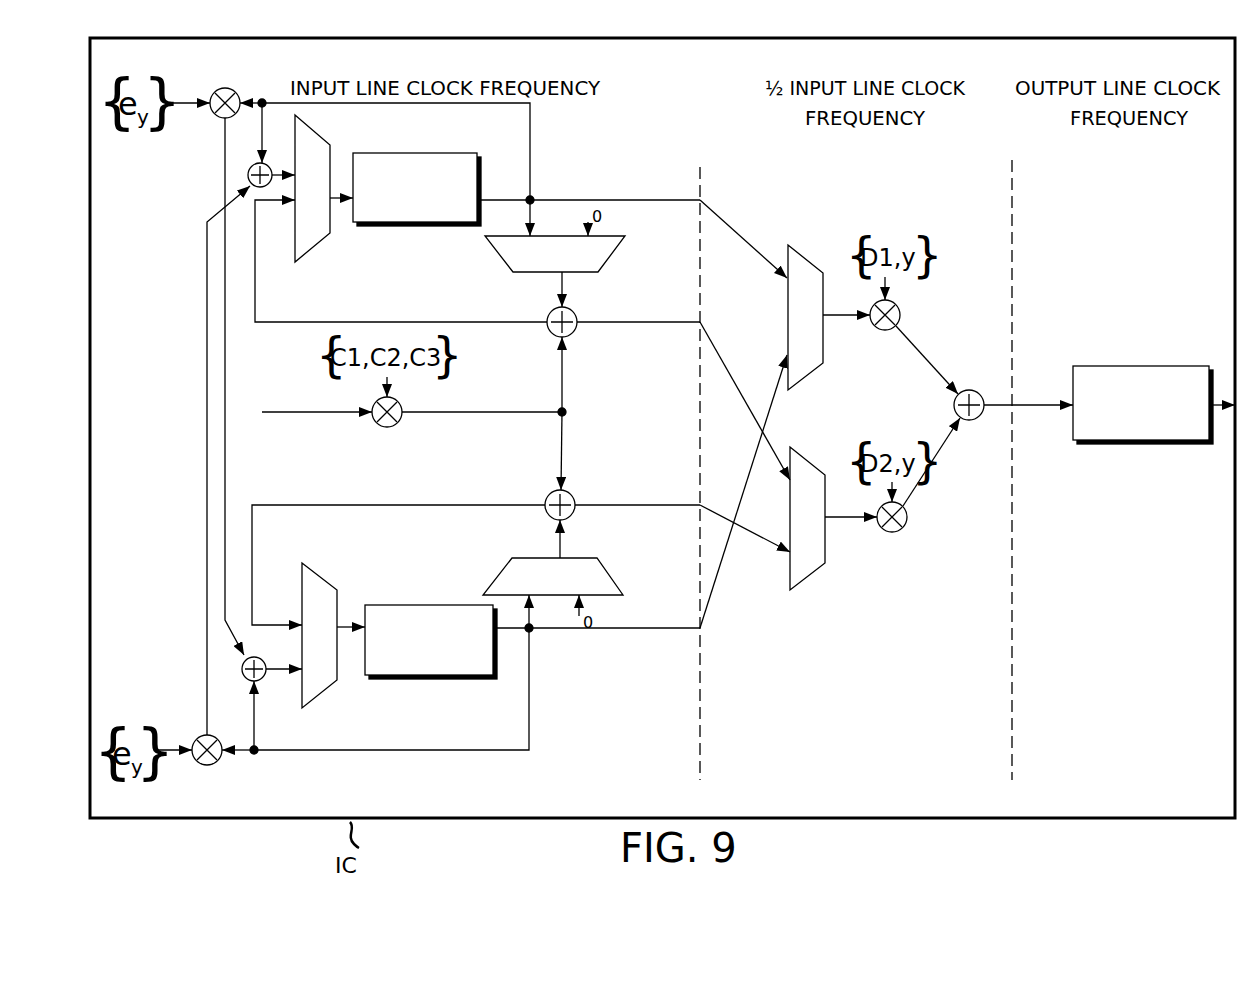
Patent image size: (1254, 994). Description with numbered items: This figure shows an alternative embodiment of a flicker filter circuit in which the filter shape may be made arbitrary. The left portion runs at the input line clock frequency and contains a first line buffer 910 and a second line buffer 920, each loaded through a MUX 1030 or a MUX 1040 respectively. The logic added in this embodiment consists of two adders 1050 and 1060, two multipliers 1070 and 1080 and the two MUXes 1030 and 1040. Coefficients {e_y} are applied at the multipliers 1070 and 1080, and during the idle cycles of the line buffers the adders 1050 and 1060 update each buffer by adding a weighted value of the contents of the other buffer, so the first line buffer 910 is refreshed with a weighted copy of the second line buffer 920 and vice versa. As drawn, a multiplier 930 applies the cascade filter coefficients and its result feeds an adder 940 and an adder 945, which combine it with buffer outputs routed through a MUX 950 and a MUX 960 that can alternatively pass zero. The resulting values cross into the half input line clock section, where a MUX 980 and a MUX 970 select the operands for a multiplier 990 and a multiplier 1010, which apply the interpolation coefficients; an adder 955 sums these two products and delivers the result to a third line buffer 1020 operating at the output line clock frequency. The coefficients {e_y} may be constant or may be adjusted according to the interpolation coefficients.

The line buffer 1 910 is at (502, 171).
The line buffer 2 920 is at (430, 680).
The coefficient multiplier 930 is at (387, 428).
The adder 940 is at (556, 337).
The adder 945 is at (568, 492).
The multiplexer 950 is at (498, 258).
The output adder 955 is at (976, 421).
The multiplexer 960 is at (496, 578).
The multiplexer 970 is at (805, 578).
The multiplexer 980 is at (801, 254).
The multiplier 990 is at (888, 331).
The multiplier 1010 is at (895, 533).
The line buffer 3 1020 is at (1143, 443).
The MUX 1030 is at (328, 236).
The MUX 1040 is at (353, 560).
The adder 1050 is at (248, 170).
The adder 1060 is at (265, 679).
The multiplier 1070 is at (207, 108).
The multiplier 1080 is at (199, 737).